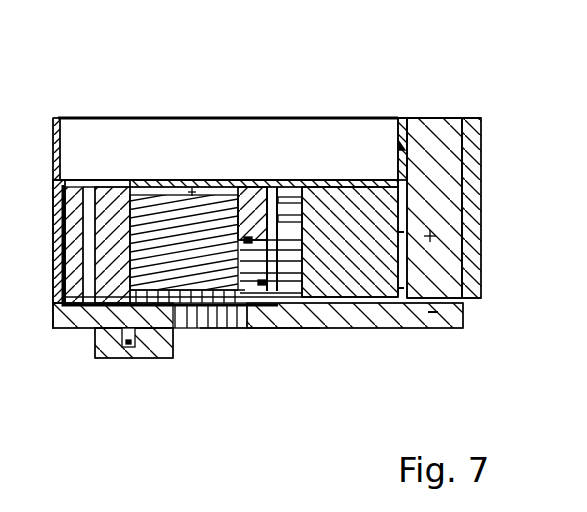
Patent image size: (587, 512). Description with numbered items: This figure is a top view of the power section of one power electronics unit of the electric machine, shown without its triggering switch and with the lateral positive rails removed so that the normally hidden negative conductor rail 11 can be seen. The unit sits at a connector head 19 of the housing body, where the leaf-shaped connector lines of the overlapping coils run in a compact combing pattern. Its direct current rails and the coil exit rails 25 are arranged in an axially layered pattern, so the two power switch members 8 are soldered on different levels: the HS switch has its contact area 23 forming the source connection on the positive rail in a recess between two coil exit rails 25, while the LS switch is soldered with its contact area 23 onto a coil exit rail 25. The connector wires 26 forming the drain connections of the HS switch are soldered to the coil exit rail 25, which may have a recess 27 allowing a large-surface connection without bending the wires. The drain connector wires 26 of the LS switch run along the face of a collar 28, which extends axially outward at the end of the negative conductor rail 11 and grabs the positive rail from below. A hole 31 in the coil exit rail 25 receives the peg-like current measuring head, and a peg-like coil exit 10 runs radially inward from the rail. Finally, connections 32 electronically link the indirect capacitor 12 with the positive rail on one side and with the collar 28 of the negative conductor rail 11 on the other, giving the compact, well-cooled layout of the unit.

The power switch members 8 is at (240, 327).
The coil exit 10 is at (150, 362).
The negative conductor rail 11 is at (478, 113).
The indirect capacitor 12 is at (283, 133).
The connector head 19 is at (440, 130).
The contact area 23 is at (220, 177).
The coil exit rail 25 is at (118, 187).
The connector wires 26 is at (210, 327).
The recess 27 is at (270, 327).
The collar 28 is at (463, 318).
The hole 31 is at (128, 350).
The connections 32 is at (408, 110).